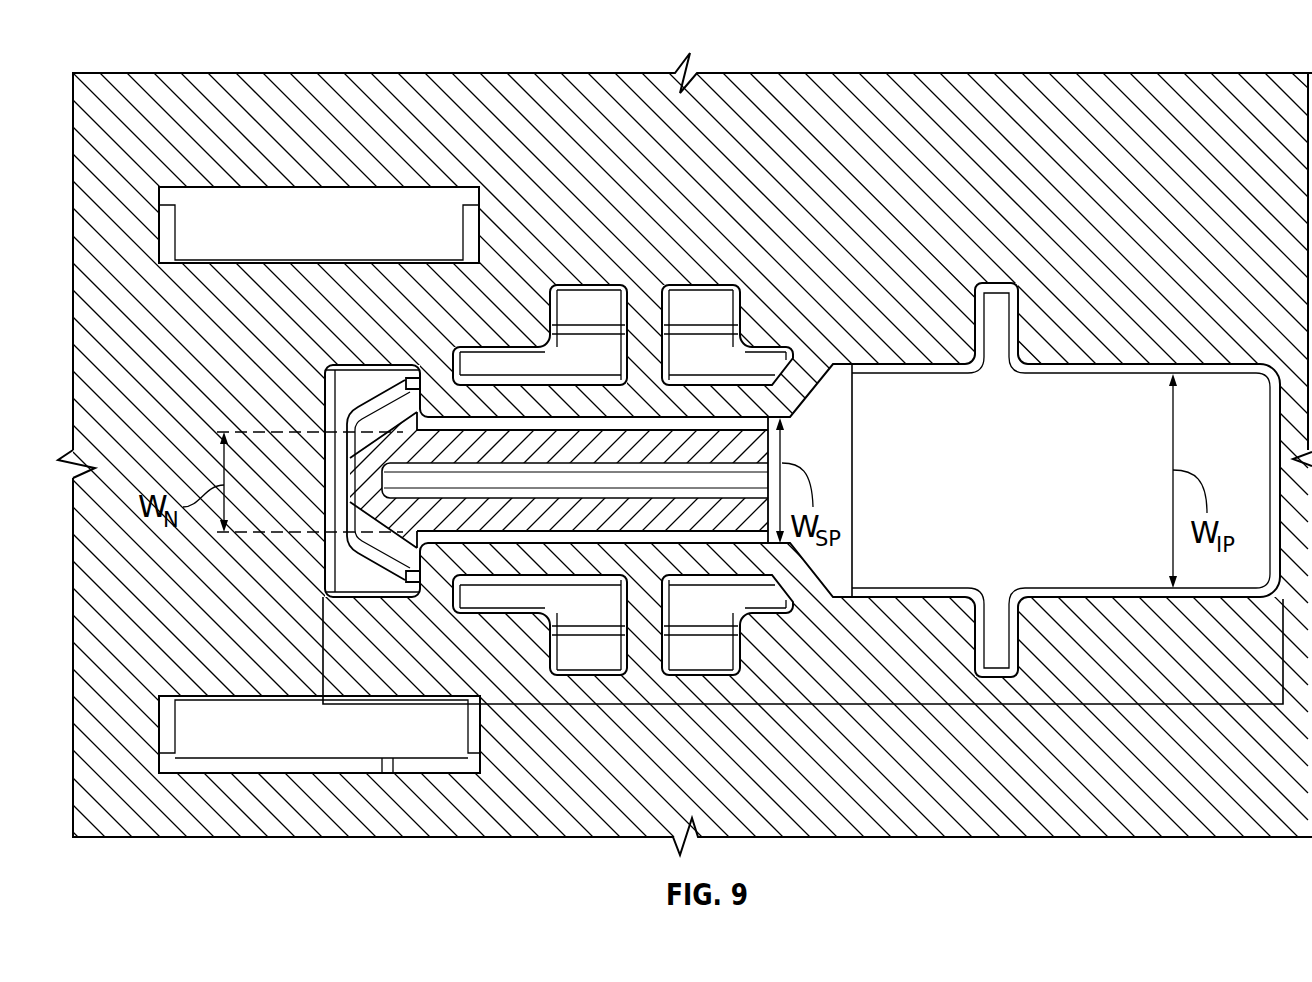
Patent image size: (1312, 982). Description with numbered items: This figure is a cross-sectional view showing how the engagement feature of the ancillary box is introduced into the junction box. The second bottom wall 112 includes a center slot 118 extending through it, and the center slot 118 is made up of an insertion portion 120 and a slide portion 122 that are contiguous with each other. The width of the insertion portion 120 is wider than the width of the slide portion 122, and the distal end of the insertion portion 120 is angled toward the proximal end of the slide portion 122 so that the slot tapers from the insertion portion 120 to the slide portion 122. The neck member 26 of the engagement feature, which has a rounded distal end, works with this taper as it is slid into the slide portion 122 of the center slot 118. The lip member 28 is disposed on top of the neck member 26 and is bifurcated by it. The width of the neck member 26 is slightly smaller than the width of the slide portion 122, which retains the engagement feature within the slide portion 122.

The second bottom wall 112 is at (1205, 790).
The center slot 118 is at (821, 318).
The insertion portion 120 is at (1040, 703).
The slide portion 122 is at (577, 700).
The neck member 26 is at (363, 552).
The lip member 28 is at (403, 520).